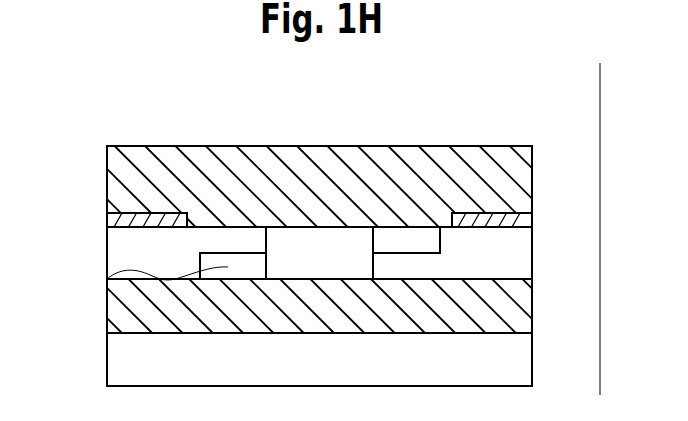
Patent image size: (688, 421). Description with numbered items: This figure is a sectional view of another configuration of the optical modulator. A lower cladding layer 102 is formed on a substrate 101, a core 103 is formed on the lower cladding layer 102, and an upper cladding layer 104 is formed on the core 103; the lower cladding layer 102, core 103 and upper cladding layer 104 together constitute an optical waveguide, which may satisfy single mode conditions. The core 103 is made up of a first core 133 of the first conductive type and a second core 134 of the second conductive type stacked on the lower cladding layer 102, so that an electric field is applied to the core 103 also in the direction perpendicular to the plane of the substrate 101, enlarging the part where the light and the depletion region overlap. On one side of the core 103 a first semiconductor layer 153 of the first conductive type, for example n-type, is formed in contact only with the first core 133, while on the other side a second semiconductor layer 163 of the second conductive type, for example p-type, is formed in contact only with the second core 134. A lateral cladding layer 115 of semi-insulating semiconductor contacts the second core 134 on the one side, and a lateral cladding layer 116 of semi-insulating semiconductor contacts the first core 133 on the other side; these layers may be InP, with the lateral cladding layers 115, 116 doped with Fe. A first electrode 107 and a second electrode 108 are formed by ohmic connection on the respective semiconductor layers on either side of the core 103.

The substrate 101 is at (533, 359).
The lower cladding layer 102 is at (533, 307).
The core 103 is at (288, 174).
The upper cladding layer 104 is at (533, 181).
The first electrode 107 is at (106, 220).
The second electrode 108 is at (533, 220).
The lateral cladding layer 115 is at (107, 279).
The lateral cladding layer 116 is at (407, 237).
The first core 133 is at (307, 245).
The second core 134 is at (329, 258).
The first semiconductor layer 153 is at (107, 253).
The second semiconductor layer 163 is at (533, 253).